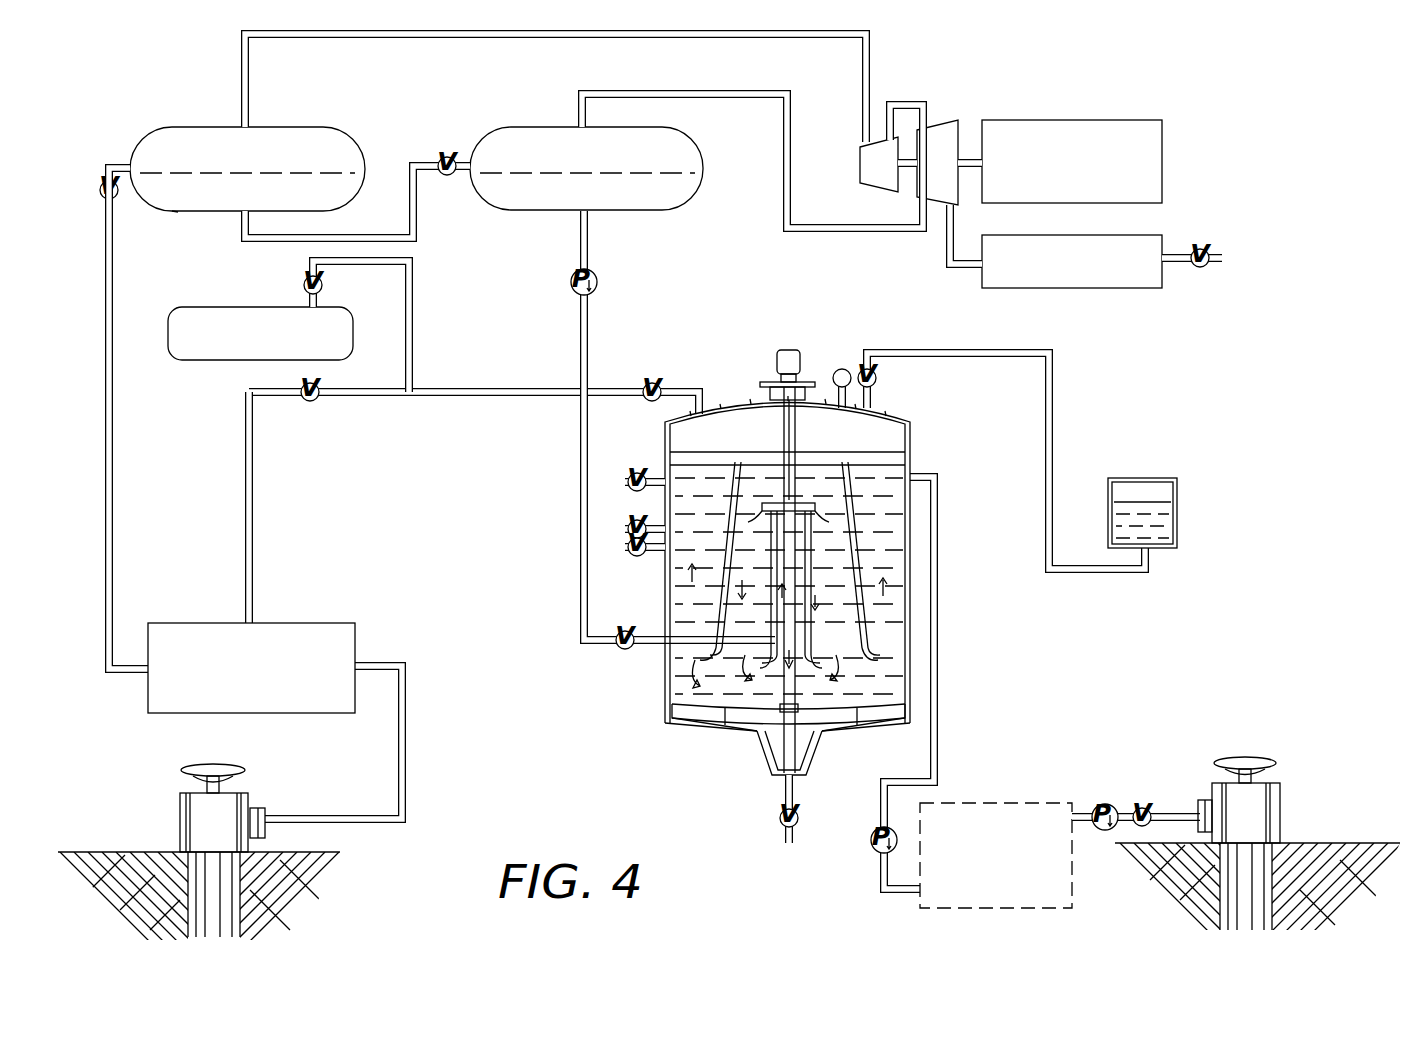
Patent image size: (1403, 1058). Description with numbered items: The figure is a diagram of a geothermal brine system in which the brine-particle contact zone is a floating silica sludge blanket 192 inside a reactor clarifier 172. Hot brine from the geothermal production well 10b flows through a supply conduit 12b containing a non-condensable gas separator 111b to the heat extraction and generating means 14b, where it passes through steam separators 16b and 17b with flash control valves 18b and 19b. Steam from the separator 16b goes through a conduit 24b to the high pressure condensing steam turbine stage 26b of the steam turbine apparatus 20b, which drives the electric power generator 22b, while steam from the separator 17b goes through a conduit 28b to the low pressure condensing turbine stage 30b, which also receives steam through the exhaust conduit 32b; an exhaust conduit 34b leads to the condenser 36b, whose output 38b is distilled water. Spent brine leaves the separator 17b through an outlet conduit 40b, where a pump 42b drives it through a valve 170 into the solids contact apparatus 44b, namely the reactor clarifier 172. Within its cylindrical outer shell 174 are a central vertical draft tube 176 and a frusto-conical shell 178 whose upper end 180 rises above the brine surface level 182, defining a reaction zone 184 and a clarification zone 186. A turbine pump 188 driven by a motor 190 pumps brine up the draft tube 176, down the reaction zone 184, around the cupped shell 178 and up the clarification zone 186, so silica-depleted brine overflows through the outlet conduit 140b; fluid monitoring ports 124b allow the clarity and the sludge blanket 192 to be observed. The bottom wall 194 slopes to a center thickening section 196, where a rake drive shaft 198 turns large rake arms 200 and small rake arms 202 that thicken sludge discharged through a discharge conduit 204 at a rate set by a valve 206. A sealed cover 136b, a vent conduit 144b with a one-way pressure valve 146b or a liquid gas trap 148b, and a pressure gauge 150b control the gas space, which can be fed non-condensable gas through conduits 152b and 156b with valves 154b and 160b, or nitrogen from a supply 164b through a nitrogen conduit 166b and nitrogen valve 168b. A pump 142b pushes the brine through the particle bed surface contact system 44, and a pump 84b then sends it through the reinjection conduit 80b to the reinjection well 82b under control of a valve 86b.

The geothermal production well 10b is at (173, 827).
The supply conduit 12b is at (114, 412).
The heat extraction and generating means 14b is at (228, 122).
The steam separator 16b is at (178, 213).
The steam separator 17b is at (504, 212).
The flash control valve 18b is at (99, 190).
The flash control valve 19b is at (446, 156).
The steam turbine apparatus 20b is at (897, 205).
The electric power generator 22b is at (1090, 110).
The conduit 24b is at (410, 38).
The high pressure condensing steam turbine stage 26b is at (860, 165).
The conduit 28b is at (665, 92).
The low pressure condensing turbine stage 30b is at (950, 125).
The exhaust conduit 32b is at (905, 102).
The exhaust conduit 34b is at (940, 264).
The condenser 36b is at (1050, 288).
The output 38b is at (1212, 264).
The outlet conduit 40b is at (592, 306).
The pump 42b is at (598, 282).
The particle bed surface contact system 44 is at (1025, 803).
The solids contact apparatus 44b is at (662, 694).
The reinjection conduit 80b is at (1170, 812).
The reinjection well 82b is at (1284, 789).
The pump 84b is at (1105, 803).
The valve 86b is at (1142, 807).
The non-condensable gas separator 111b is at (322, 623).
The fluid monitoring ports 124b is at (624, 547).
The cover 136b is at (738, 406).
The outlet conduit 140b is at (942, 630).
The pump 142b is at (870, 850).
The vent conduit 144b is at (962, 353).
The one-way pressure valve 146b is at (878, 380).
The liquid gas trap 148b is at (1180, 516).
The pressure gauge 150b is at (842, 369).
The conduit 152b is at (256, 506).
The valve 154b is at (312, 404).
The conduit 156b is at (524, 380).
The valve 160b is at (650, 382).
The source of supply of nitrogen 164b is at (206, 307).
The nitrogen conduit 166b is at (413, 330).
The nitrogen valve 168b is at (304, 287).
The valve 170 is at (620, 649).
The reactor clarifier 172 is at (916, 433).
The outer shell 174 is at (663, 436).
The central vertical draft tube 176 is at (806, 642).
The frusto-conical shell 178 is at (850, 505).
The upper end 180 is at (846, 462).
The surface level 182 is at (912, 471).
The reaction zone 184 is at (820, 588).
The clarification zone 186 is at (864, 568).
The turbine pump 188 is at (769, 503).
The motor 190 is at (796, 350).
The floating silica sludge blanket 192 is at (688, 546).
The bottom wall 194 is at (706, 732).
The center thickening section 196 is at (812, 771).
The rake drive shaft 198 is at (790, 707).
The large rake arms 200 is at (680, 722).
The small rake arms 202 is at (816, 749).
The discharge conduit 204 is at (783, 790).
The valve 206 is at (779, 821).